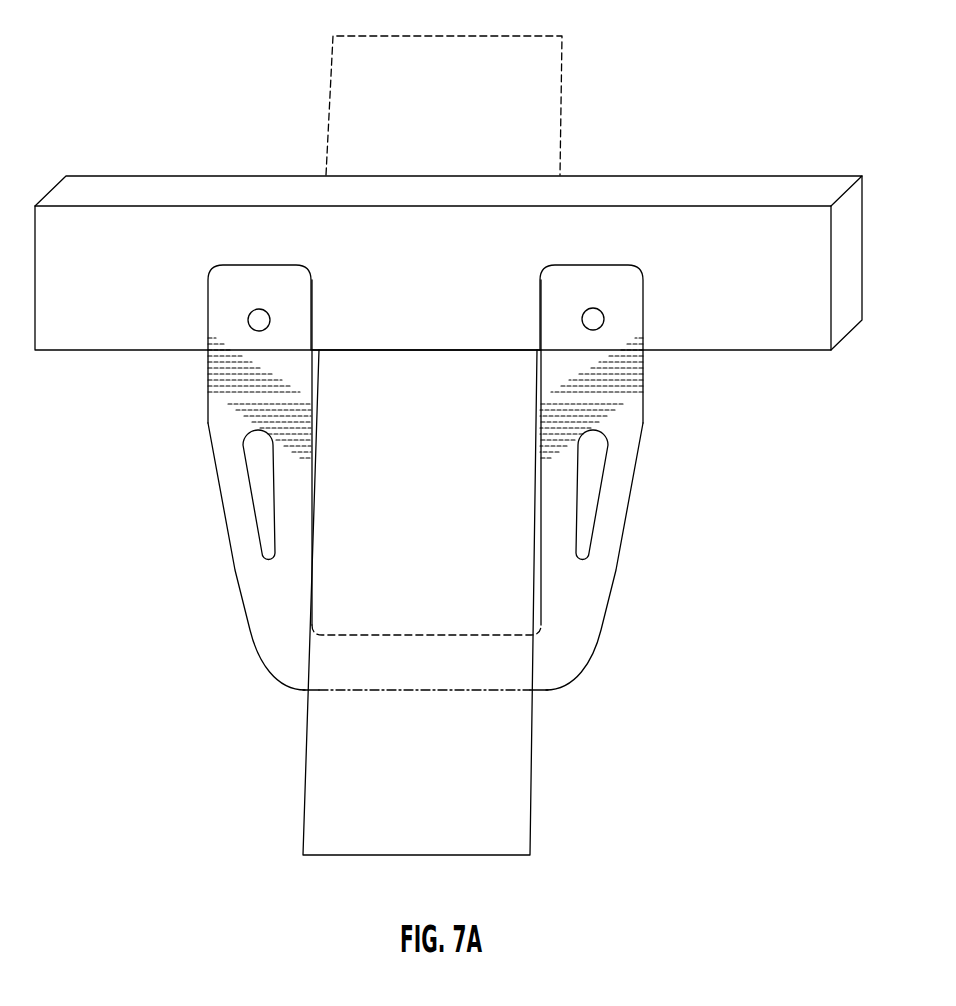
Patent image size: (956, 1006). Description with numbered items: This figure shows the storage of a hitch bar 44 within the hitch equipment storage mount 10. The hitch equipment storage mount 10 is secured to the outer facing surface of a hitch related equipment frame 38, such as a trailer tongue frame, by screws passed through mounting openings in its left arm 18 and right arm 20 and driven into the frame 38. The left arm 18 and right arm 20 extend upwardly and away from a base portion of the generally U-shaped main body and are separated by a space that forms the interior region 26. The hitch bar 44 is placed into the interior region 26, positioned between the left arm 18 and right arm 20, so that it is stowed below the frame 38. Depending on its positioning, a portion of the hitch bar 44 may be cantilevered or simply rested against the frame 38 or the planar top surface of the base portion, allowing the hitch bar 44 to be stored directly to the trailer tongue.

The hitch related equipment frame 38 is at (110, 175).
The interior region 26 is at (314, 398).
The left arm 18 is at (224, 477).
The right arm 20 is at (637, 455).
The hitch equipment storage mount 10 is at (413, 477).
The hitch bar 44 is at (515, 818).